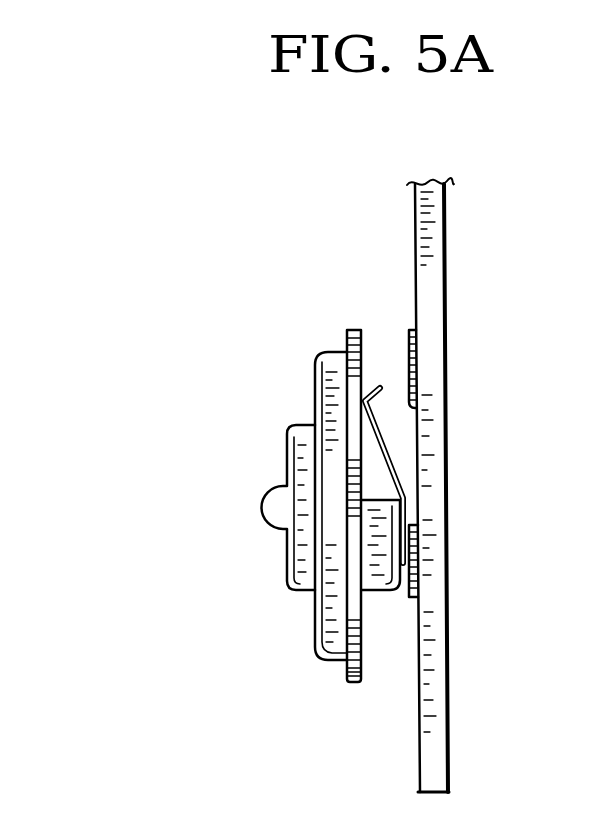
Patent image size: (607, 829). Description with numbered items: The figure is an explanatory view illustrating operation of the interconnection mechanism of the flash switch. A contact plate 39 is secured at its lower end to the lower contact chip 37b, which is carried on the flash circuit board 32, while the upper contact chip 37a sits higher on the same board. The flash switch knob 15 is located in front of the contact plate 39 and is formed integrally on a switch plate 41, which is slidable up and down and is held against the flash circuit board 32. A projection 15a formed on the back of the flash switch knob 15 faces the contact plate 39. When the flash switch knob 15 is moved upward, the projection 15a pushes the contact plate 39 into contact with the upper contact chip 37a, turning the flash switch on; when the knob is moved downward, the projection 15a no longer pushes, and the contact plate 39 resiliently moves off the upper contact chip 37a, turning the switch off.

The flash switch knob 15 is at (288, 463).
The projection 15a is at (378, 594).
The flash circuit board 32 is at (477, 233).
The upper contact chip 37a is at (407, 345).
The lower contact chip 37b is at (401, 600).
The contact plate 39 is at (370, 342).
The switch plate 41 is at (322, 696).